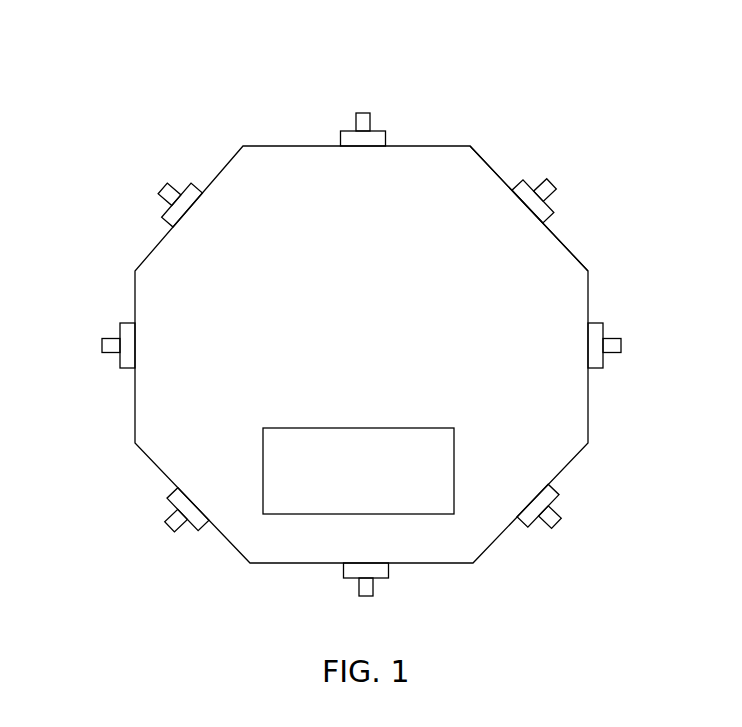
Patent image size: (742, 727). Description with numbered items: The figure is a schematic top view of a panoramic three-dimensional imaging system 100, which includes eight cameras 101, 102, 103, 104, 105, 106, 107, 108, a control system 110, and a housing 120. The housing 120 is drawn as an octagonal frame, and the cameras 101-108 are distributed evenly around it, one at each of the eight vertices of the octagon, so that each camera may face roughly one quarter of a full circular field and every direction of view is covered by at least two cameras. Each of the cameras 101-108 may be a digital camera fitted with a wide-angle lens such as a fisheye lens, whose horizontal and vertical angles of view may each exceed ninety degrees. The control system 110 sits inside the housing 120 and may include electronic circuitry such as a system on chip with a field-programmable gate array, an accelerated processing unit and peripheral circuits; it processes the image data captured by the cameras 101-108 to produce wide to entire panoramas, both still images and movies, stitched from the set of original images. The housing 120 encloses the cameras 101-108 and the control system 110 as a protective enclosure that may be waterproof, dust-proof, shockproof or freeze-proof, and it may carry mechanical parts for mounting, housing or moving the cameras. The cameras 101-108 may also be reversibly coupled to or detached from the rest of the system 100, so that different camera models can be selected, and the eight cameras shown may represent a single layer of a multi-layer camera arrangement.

The panoramic 3D imaging system 100 is at (588, 120).
The camera 101 is at (363, 117).
The camera 102 is at (545, 192).
The camera 103 is at (628, 345).
The camera 104 is at (555, 515).
The camera 105 is at (366, 593).
The camera 106 is at (173, 518).
The camera 107 is at (98, 345).
The camera 108 is at (160, 199).
The control system 110 is at (358, 471).
The housing 120 is at (590, 270).